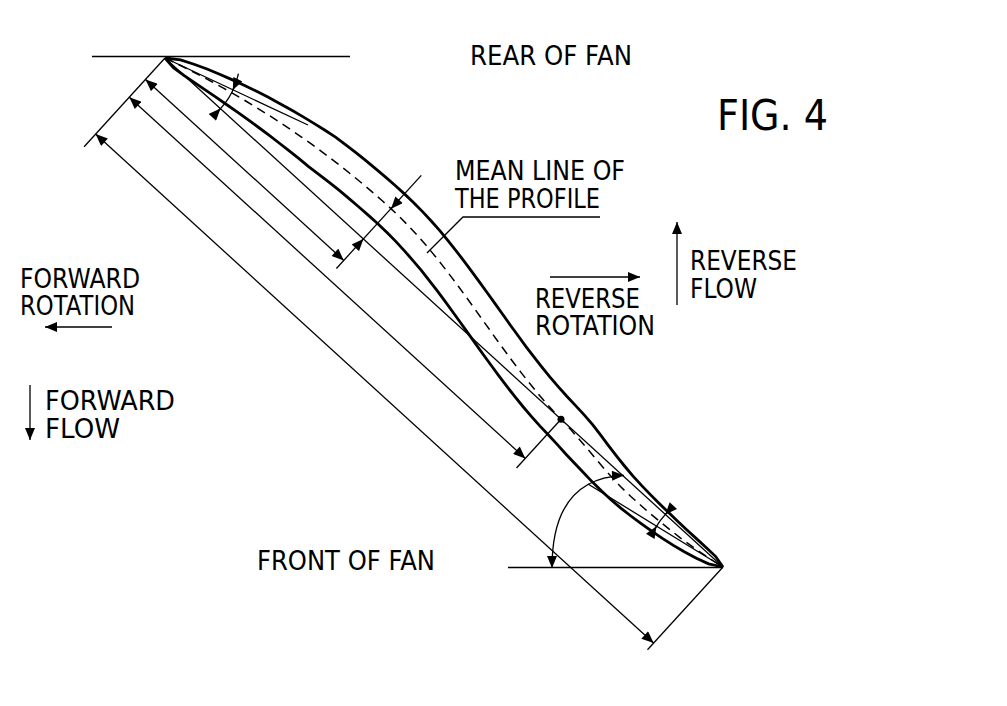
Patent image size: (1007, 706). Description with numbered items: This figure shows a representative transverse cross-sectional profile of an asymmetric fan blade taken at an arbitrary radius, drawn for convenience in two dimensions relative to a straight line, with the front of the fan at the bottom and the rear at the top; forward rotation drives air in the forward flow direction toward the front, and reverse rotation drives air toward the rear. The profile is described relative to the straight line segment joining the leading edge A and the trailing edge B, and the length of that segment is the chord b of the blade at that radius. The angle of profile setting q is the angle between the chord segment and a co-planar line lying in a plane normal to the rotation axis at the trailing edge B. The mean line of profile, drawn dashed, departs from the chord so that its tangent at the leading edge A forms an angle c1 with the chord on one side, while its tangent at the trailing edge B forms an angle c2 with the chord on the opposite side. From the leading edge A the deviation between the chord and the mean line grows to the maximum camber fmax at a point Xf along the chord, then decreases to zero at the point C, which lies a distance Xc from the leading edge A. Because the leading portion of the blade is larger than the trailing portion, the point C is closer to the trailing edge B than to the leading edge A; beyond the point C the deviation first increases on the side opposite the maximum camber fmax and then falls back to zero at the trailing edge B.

The leading edge A is at (221, 32).
The trailing edge B is at (691, 577).
The crossing point of mean line of profile C is at (579, 413).
The leading-edge tangent angle c1 is at (241, 62).
The trailing-edge tangent angle c2 is at (651, 536).
The maximum camber fmax is at (383, 203).
The position of maximum camber Xf is at (222, 149).
The distance of point C from leading edge Xc is at (240, 198).
The chord b is at (375, 388).
The angle of profile setting q is at (588, 521).